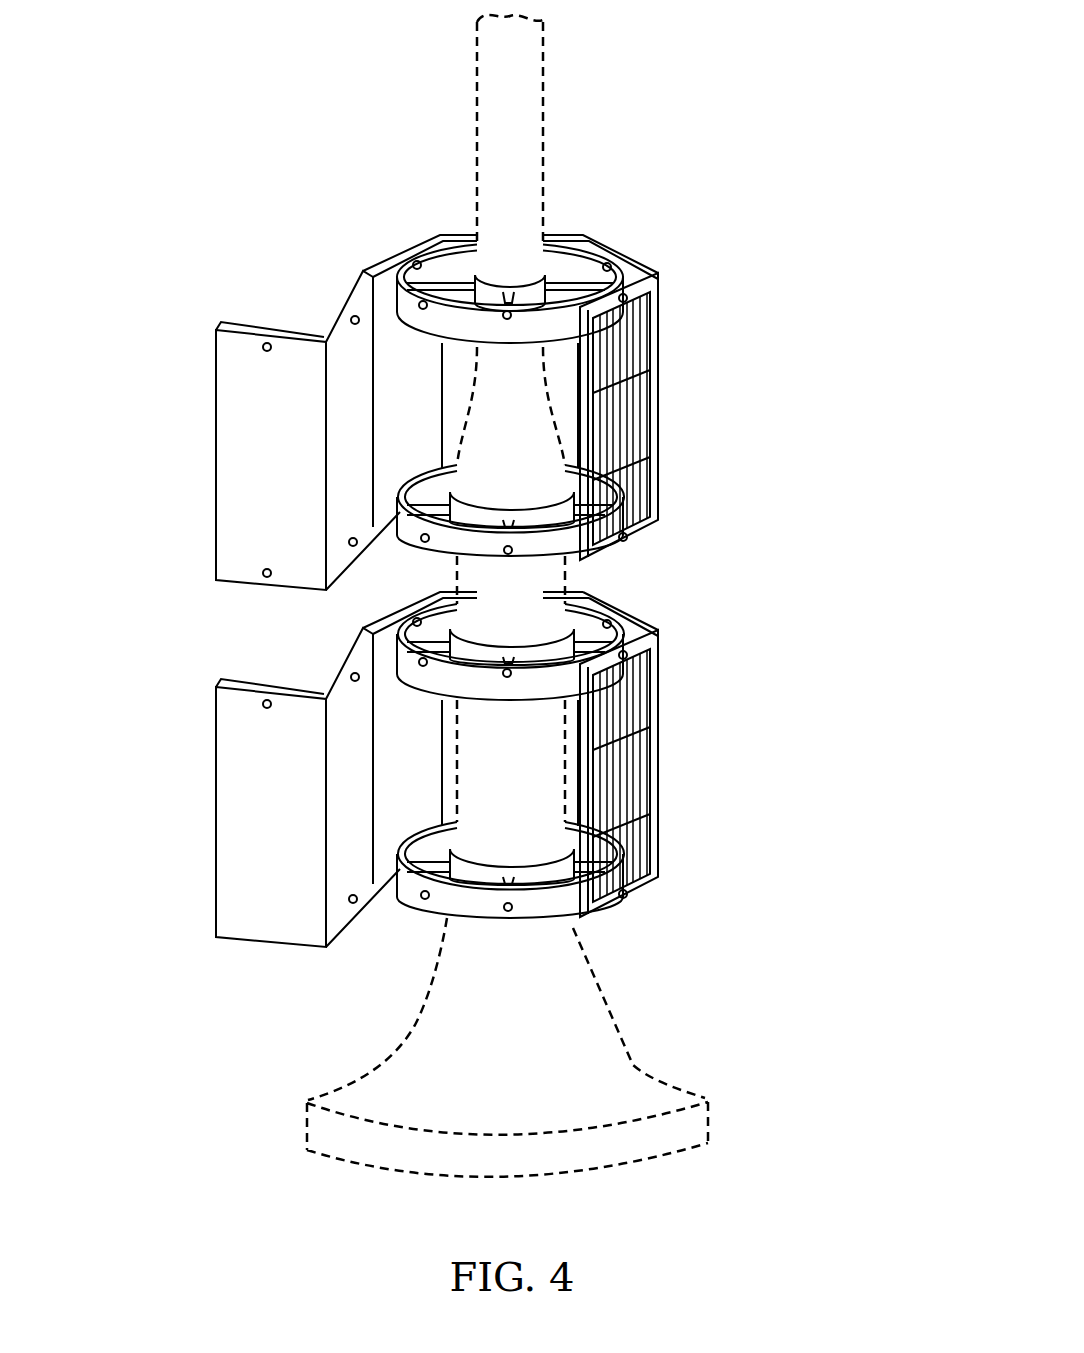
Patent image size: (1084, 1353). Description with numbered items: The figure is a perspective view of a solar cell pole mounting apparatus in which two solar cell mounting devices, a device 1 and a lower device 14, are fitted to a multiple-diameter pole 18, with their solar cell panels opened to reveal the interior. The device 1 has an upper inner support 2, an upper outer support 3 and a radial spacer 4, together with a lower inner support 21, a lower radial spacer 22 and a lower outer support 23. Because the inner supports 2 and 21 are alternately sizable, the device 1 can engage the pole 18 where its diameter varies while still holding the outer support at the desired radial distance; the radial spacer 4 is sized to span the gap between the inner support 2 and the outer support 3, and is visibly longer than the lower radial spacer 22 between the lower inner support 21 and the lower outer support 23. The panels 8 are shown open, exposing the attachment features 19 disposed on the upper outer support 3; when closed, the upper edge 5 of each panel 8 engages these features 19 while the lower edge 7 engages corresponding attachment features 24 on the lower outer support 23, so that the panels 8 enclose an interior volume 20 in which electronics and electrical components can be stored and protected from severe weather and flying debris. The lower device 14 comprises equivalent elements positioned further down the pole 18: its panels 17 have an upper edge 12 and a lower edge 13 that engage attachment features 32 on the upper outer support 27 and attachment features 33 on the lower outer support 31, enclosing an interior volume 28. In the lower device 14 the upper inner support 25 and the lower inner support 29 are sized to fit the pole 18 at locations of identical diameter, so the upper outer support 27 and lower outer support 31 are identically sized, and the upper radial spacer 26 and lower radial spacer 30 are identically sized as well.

The device 1 is at (500, 357).
The inner support 2 is at (546, 278).
The outer support 3 is at (605, 273).
The radial spacer 4 is at (452, 293).
The upper edge 5 is at (657, 276).
The lower edge 7 is at (648, 528).
The panels 8 is at (278, 426).
The upper edge of lower device panels 12 is at (560, 633).
The lower edge of lower device panels 13 is at (655, 885).
The lower device 14 is at (466, 842).
The panels of lower device 17 is at (276, 783).
The multiple diameter pole 18 is at (627, 1078).
The attachment features 19 is at (775, 335).
The interior volume 20 is at (407, 399).
The lower inner support 21 is at (456, 464).
The lower radial spacer 22 is at (432, 500).
The lower outer support 23 is at (413, 532).
The attachment features of lower support 24 is at (770, 536).
The lower device inner support 25 is at (575, 603).
The lower device radial spacer 26 is at (611, 622).
The lower device outer support 27 is at (630, 617).
The interior volume of lower device 28 is at (407, 754).
The lower device lower inner support 29 is at (456, 821).
The lower device lower radial spacer 30 is at (432, 857).
The lower device lower outer support 31 is at (413, 889).
The attachment features of upper outer support of lower device 32 is at (725, 762).
The attachment features of lower outer support of lower device 33 is at (775, 932).